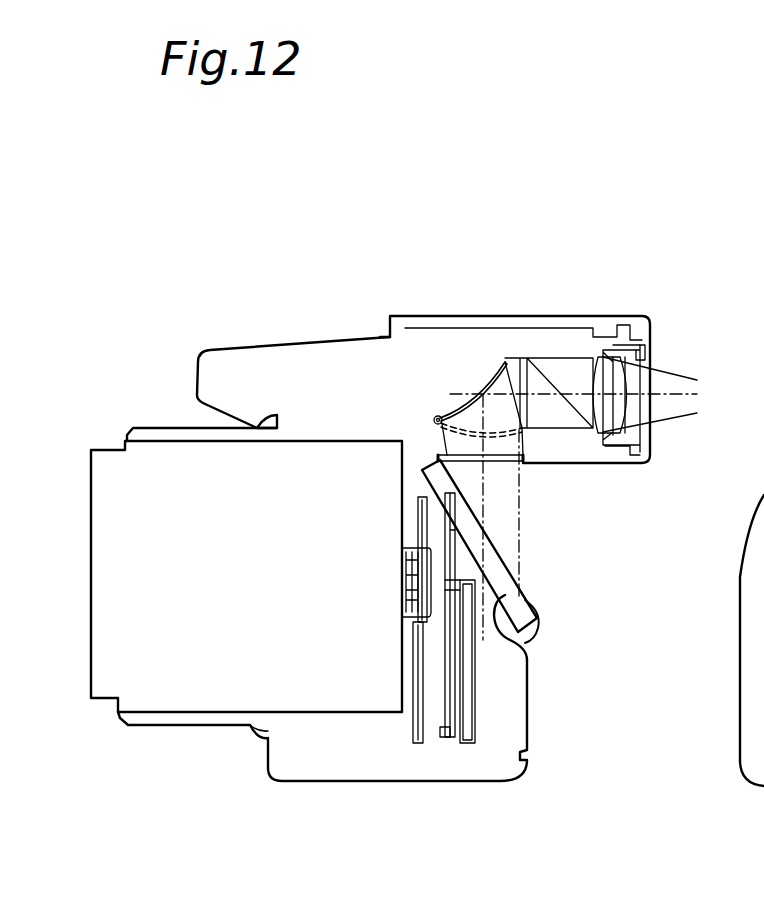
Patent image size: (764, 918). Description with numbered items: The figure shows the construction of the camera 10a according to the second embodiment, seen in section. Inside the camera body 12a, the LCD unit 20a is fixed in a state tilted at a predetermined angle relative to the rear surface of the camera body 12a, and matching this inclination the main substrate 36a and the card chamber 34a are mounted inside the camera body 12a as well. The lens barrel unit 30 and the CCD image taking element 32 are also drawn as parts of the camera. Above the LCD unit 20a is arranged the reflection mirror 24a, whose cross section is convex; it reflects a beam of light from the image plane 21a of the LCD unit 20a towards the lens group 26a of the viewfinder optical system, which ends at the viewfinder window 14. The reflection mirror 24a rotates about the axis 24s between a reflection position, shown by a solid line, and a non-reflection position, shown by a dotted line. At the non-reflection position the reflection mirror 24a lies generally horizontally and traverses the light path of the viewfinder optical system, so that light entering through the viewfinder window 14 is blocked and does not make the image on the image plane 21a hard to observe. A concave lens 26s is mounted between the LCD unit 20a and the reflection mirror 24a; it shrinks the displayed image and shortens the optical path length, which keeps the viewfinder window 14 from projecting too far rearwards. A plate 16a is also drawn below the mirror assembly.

The camera 10a is at (540, 222).
The camera body 12a is at (328, 781).
The viewfinder window 14 is at (640, 363).
The focusing screen 16a is at (527, 465).
The LCD unit 20a is at (503, 650).
The image plane 21a is at (497, 557).
The reflection mirror 24a is at (490, 380).
The axis 24s is at (436, 416).
The lens group 26a is at (638, 305).
The concave lens 26s is at (445, 425).
The lens barrel unit 30 is at (192, 693).
The CCD image taking element 32 is at (402, 566).
The card chamber 34a is at (465, 707).
The main substrate 36a is at (445, 740).